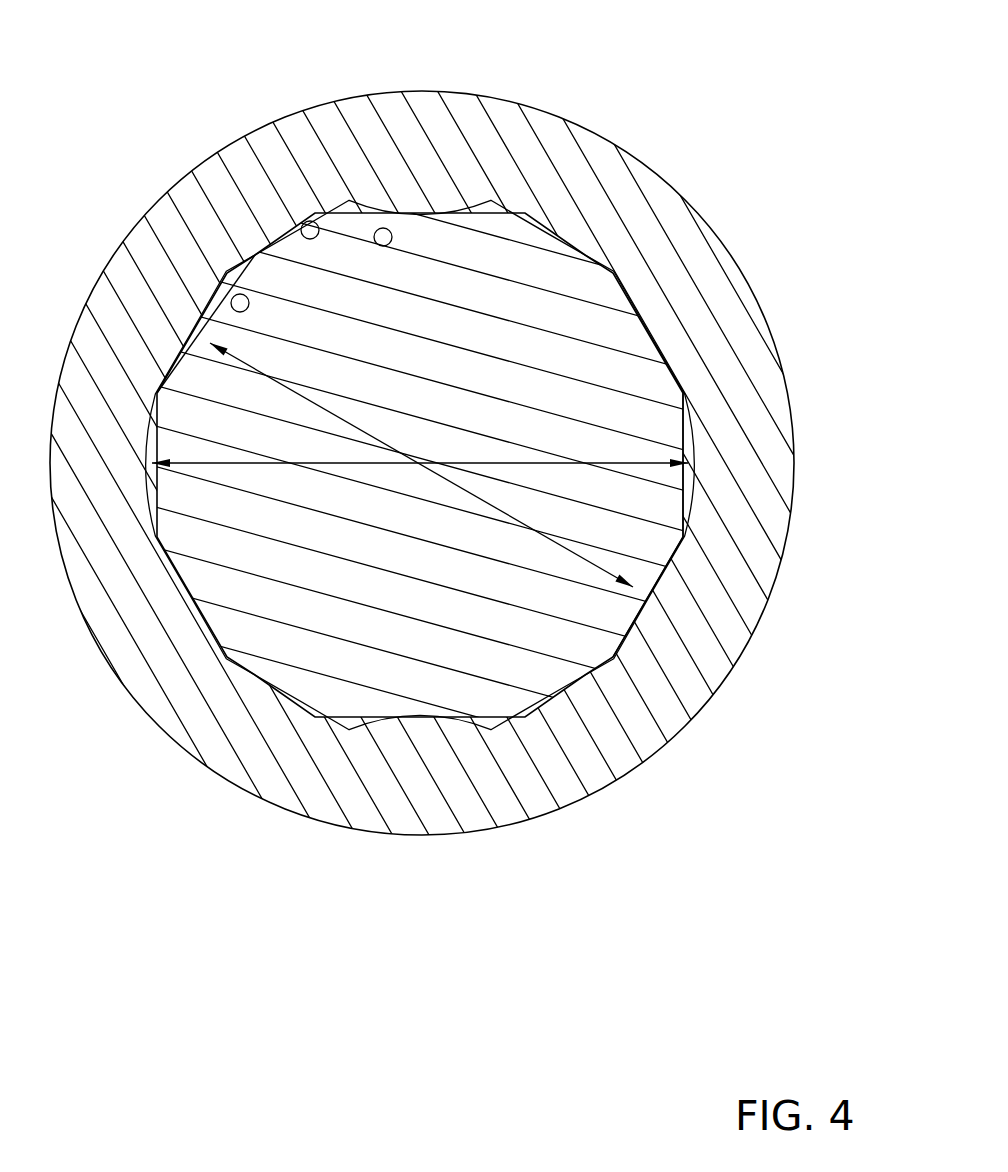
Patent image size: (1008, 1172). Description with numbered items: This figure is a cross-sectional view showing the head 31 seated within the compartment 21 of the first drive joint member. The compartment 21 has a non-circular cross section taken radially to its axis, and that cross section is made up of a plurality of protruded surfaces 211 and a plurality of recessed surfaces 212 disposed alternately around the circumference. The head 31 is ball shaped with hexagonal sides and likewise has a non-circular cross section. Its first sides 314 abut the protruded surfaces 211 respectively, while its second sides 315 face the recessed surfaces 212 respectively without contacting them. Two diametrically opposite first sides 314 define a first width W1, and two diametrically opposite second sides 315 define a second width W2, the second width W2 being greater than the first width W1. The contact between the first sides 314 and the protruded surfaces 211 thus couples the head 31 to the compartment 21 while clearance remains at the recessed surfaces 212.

The compartment 21 is at (365, 230).
The protruded surfaces 211 is at (248, 265).
The recessed surfaces 212 is at (306, 228).
The head 31 is at (612, 245).
The first sides 314 is at (615, 655).
The second sides 315 is at (688, 490).
The first width W1 is at (580, 553).
The second width W2 is at (627, 463).